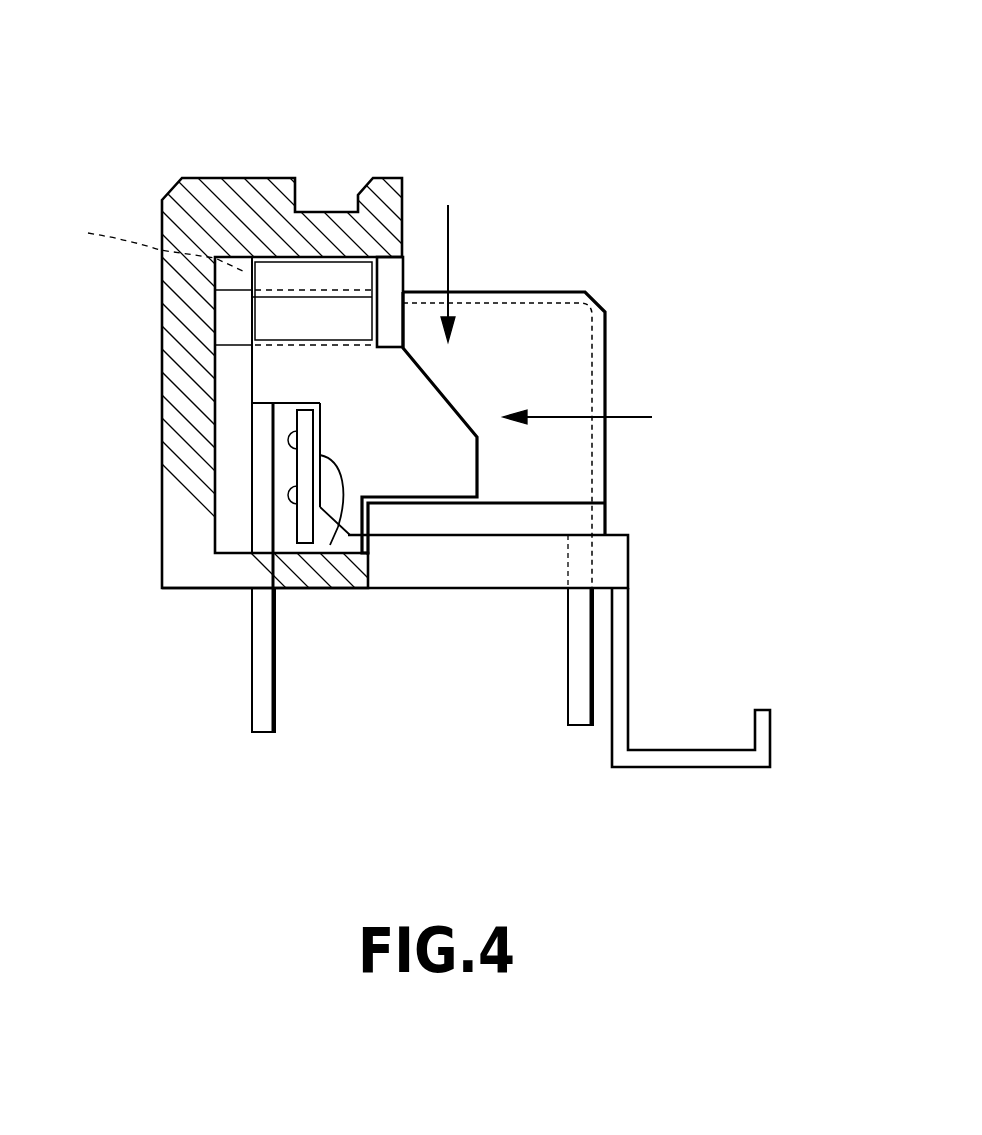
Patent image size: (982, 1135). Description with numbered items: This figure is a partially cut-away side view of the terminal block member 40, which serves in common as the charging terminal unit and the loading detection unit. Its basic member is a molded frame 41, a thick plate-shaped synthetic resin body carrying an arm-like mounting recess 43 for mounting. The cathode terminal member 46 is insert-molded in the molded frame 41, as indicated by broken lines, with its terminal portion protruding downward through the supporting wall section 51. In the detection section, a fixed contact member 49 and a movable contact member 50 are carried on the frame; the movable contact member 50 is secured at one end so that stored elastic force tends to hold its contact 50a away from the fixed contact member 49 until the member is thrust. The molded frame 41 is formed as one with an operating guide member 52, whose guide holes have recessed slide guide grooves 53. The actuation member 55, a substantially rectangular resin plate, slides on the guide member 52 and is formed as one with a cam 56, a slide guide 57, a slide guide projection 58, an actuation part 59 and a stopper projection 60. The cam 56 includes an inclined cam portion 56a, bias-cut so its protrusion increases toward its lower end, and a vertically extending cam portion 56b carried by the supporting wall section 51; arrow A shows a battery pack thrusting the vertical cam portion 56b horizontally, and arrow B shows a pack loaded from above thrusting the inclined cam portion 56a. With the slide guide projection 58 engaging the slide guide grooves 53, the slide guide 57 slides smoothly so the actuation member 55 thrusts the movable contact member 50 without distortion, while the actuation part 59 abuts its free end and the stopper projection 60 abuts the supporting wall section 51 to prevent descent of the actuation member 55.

The terminal block member 40 is at (108, 43).
The molded frame 41 is at (180, 340).
The arm-like mounting recess 43 is at (687, 757).
The cathode terminal member 46 is at (578, 363).
The fixed contact member 49 is at (248, 500).
The movable contact member 50 is at (305, 468).
The contact 50a is at (318, 498).
The supporting wall section 51 is at (432, 520).
The operating guide member 52 is at (266, 257).
The slide guide grooves 53 is at (142, 242).
The actuation member 55 is at (227, 377).
The cam 56 is at (595, 508).
The inclined cam portion 56a is at (447, 398).
The vertically extending cam portion 56b is at (480, 477).
The slide guide 57 is at (317, 267).
The slide guide projection 58 is at (345, 312).
The actuation part 59 is at (325, 548).
The stopper projection 60 is at (348, 518).